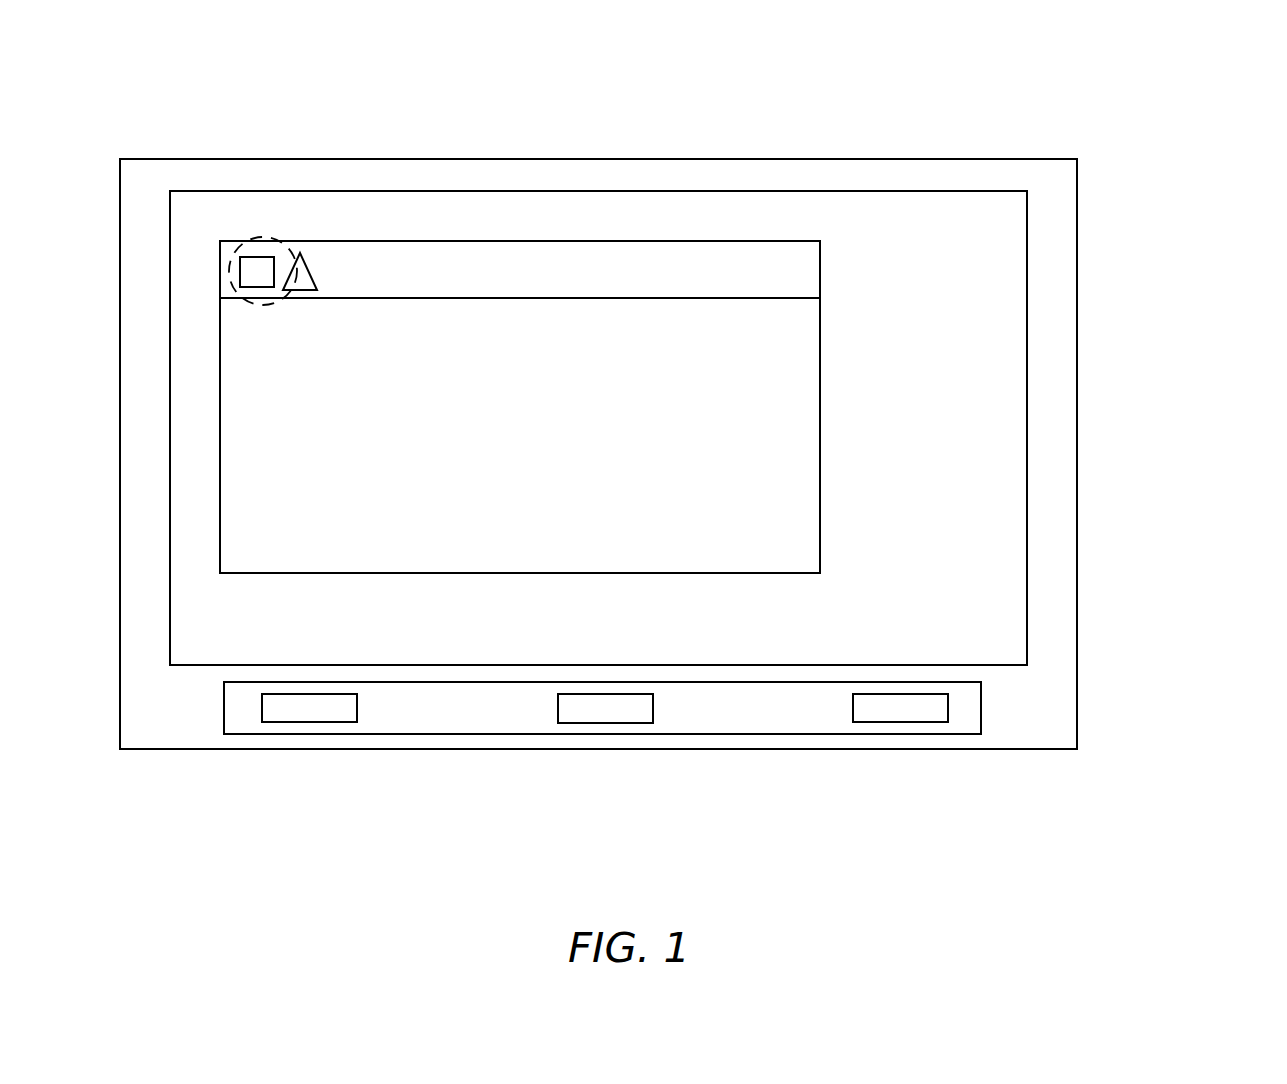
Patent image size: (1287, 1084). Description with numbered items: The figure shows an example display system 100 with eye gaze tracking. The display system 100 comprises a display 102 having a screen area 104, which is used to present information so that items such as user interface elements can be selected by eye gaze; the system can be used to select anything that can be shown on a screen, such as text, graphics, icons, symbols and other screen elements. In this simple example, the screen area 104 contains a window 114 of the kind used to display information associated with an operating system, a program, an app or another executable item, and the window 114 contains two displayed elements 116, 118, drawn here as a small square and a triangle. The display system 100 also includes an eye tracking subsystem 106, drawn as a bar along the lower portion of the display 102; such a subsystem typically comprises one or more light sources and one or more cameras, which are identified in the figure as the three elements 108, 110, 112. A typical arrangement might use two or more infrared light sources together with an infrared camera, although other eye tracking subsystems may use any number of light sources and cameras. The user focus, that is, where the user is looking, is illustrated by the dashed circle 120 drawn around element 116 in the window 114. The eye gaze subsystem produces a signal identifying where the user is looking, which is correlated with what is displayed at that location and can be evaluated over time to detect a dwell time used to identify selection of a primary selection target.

The display system 100 is at (1252, 78).
The display 102 is at (607, 422).
The screen area 104 is at (622, 428).
The eye tracking subsystem 106 is at (631, 741).
The eye tracking element 108 is at (900, 747).
The eye tracking element 110 is at (607, 747).
The eye tracking element 112 is at (315, 747).
The window 114 is at (544, 407).
The element 116 is at (235, 239).
The element 118 is at (323, 241).
The dashed circle 120 is at (271, 305).